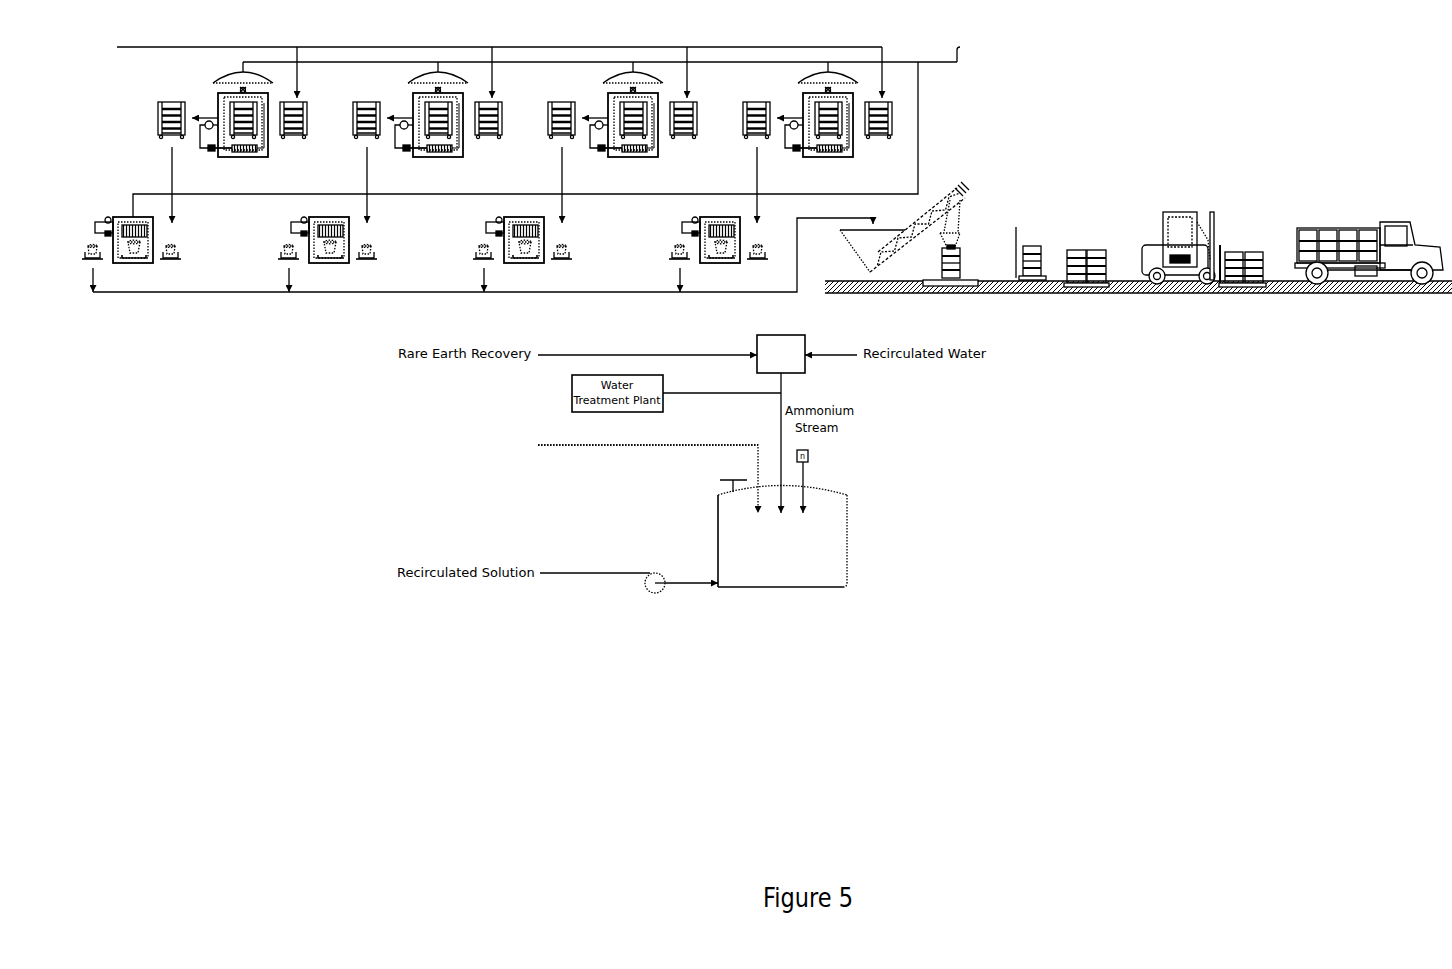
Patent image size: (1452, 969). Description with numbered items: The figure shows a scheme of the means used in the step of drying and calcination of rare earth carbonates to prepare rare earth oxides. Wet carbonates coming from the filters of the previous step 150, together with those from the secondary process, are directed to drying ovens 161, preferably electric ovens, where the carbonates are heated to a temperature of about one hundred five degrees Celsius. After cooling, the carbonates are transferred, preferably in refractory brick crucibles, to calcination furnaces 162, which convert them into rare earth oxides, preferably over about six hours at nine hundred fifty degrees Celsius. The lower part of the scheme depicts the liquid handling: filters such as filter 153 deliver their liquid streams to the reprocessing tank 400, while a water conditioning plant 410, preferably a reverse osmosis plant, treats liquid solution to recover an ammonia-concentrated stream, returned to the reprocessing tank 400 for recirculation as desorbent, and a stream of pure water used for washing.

The filters of the previous step 150 is at (521, 129).
The drying ovens 161 is at (525, 142).
The calcination furnaces 162 is at (477, 241).
The filter 153 is at (610, 471).
The reprocessing tank 400 is at (782, 533).
The water conditioning plant 410 is at (781, 354).